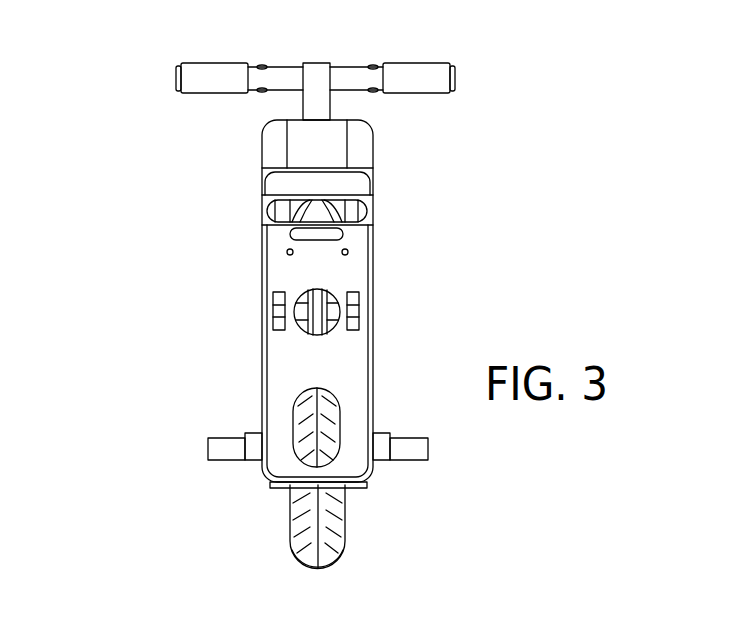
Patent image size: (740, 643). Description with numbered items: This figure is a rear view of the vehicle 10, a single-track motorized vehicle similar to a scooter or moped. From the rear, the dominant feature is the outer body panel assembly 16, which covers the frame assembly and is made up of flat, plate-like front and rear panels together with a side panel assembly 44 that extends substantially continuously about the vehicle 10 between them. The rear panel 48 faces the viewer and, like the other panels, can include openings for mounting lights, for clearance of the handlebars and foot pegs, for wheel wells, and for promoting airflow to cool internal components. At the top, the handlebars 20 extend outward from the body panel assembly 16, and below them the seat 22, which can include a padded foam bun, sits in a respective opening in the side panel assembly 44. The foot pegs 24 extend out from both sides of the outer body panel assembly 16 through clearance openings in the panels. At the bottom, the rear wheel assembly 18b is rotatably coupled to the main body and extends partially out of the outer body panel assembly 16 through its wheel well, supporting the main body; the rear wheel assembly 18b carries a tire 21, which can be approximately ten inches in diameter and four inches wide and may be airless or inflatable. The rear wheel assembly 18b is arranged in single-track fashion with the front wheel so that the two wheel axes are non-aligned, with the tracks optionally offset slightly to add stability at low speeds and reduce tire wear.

The vehicle 10 is at (128, 147).
The handlebars 20 is at (357, 68).
The seat 22 is at (357, 170).
The outer body panel assembly 16 is at (382, 265).
The side panel assembly 44 is at (374, 338).
The rear panel 48 is at (335, 375).
The foot pegs 24 is at (218, 445).
The rear wheel assembly 18b is at (335, 540).
The tire 21 is at (298, 563).